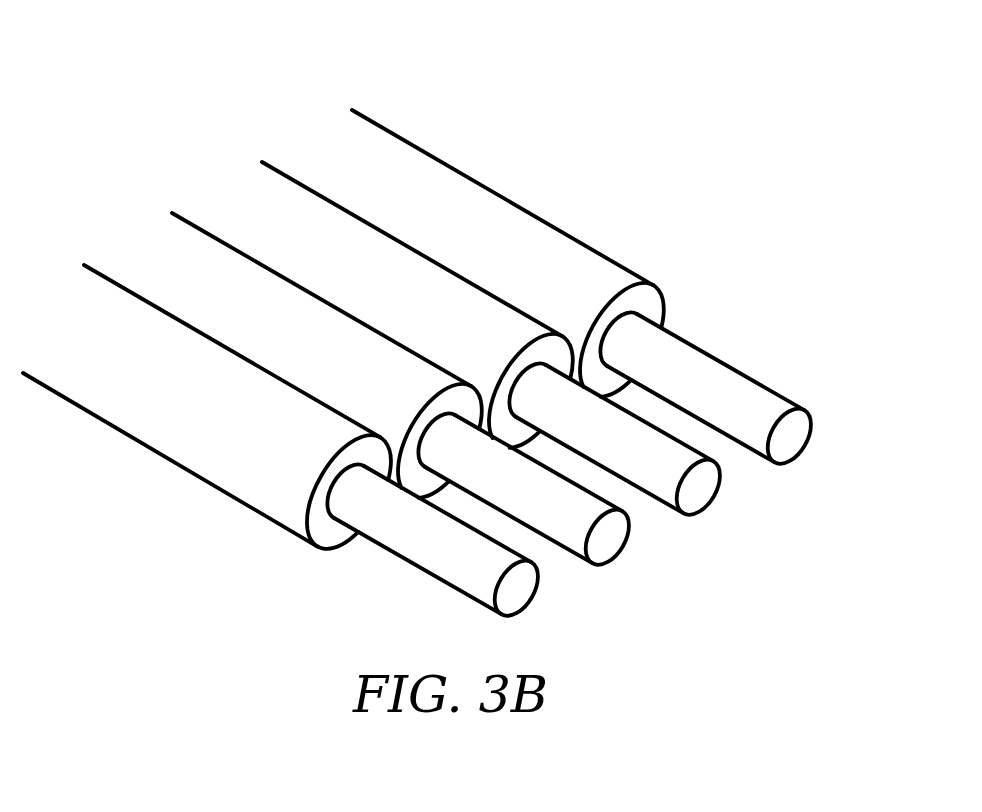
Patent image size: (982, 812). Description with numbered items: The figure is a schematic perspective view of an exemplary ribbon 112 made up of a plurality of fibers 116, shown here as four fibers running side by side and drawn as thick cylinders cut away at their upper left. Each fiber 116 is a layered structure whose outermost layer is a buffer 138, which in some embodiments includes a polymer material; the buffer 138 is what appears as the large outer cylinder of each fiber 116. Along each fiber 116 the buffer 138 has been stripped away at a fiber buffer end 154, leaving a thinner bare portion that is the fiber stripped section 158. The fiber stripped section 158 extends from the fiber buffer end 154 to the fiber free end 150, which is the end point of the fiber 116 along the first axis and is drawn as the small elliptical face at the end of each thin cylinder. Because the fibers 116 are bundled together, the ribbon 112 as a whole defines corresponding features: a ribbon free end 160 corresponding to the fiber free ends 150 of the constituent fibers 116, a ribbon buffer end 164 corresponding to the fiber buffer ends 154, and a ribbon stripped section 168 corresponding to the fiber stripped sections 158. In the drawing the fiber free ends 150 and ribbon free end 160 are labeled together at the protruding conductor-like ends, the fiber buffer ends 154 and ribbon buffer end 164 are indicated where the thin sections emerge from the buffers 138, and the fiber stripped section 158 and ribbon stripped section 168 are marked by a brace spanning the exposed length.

The ribbon 112 is at (462, 336).
The fiber 116 is at (120, 328).
The buffer 138 is at (228, 385).
The fiber free end 150 is at (694, 524).
The ribbon free end 160 is at (700, 483).
The fiber buffer end 154 is at (348, 422).
The ribbon buffer end 164 is at (603, 320).
The fiber stripped section 158 is at (597, 437).
The ribbon stripped section 168 is at (597, 437).